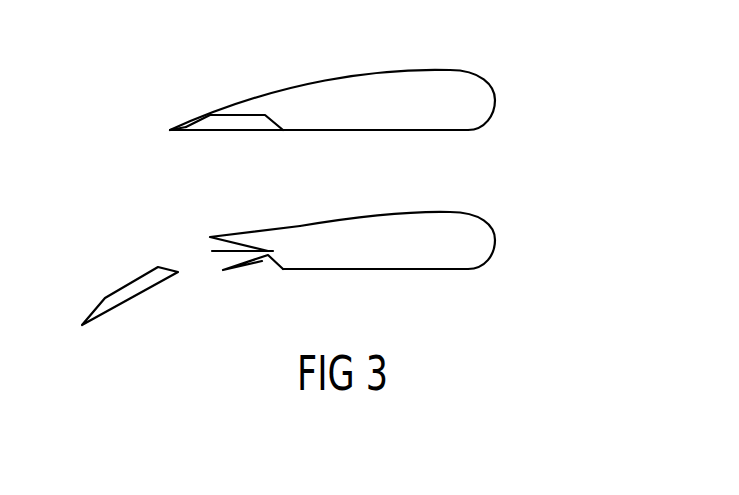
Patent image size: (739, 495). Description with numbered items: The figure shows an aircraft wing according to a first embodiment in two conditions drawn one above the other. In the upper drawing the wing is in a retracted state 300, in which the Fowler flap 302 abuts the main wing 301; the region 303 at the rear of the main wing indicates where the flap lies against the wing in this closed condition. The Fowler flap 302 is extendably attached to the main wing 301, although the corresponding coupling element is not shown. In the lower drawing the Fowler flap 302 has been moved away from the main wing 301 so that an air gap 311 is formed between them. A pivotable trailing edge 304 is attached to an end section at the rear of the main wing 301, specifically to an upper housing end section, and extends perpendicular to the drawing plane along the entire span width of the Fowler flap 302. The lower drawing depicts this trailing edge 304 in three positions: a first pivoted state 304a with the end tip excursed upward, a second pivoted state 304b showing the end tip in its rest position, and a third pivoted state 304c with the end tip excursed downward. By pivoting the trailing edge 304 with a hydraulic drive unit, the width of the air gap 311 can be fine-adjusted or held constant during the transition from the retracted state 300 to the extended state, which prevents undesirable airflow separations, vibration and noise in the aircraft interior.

The retracted state 300 is at (533, 96).
The main wing 301 is at (468, 84).
The Fowler flap 302 is at (238, 117).
The closed configuration region 303 is at (170, 103).
The pivotable trailing edge 304 is at (183, 122).
The first pivoted state 304a is at (228, 234).
The second pivoted state 304b is at (215, 252).
The third pivoted state 304c is at (240, 262).
The air gap 311 is at (170, 241).